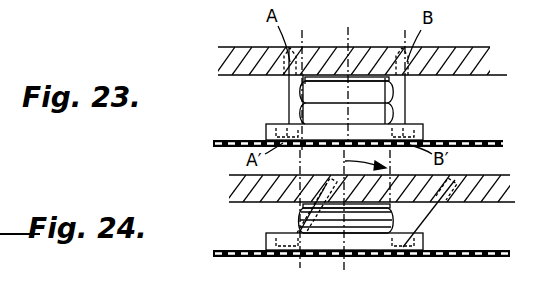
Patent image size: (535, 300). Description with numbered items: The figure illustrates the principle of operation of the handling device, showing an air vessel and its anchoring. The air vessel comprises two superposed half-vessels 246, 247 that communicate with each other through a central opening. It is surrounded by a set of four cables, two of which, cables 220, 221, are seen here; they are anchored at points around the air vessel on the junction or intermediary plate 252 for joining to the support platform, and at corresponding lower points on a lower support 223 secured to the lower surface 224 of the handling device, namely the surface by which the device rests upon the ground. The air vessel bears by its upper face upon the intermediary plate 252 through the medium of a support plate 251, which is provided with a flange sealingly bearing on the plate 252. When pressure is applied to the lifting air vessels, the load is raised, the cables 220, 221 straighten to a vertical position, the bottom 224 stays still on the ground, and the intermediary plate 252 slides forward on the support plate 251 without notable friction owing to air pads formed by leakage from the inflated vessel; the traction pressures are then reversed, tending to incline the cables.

In FIG. 23, the cable 220 is at (288, 94).
In FIG. 24, the cable 220 is at (297, 212).
In FIG. 23, the cable 221 is at (406, 101).
In FIG. 24, the cable 221 is at (421, 219).
In FIG. 24, the lower support 223 is at (329, 241).
In FIG. 24, the lower surface 224 is at (458, 258).
In FIG. 23, the half-vessel 246 is at (331, 112).
In FIG. 23, the half-vessel 247 is at (320, 82).
In FIG. 23, the support plate 251 is at (356, 80).
In FIG. 23, the intermediary plate 252 is at (448, 58).
In FIG. 24, the intermediary plate 252 is at (465, 194).